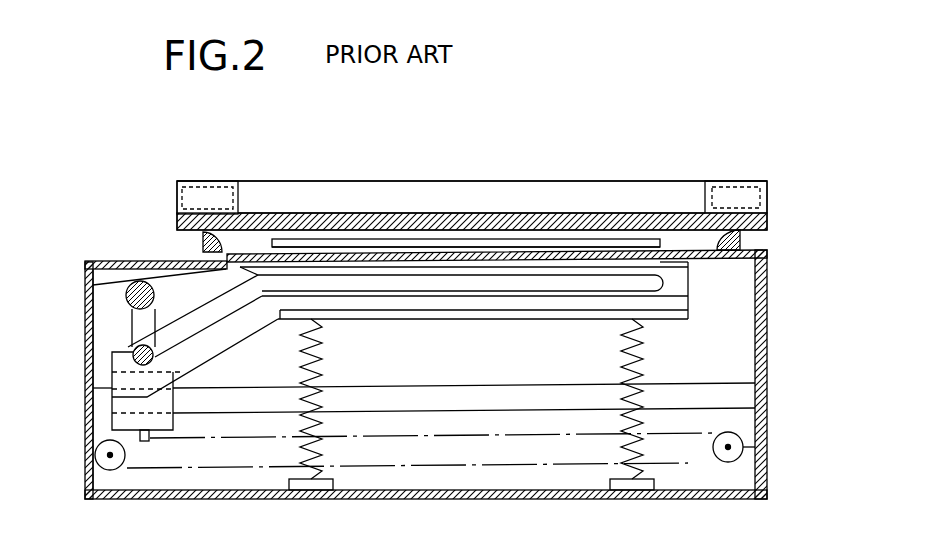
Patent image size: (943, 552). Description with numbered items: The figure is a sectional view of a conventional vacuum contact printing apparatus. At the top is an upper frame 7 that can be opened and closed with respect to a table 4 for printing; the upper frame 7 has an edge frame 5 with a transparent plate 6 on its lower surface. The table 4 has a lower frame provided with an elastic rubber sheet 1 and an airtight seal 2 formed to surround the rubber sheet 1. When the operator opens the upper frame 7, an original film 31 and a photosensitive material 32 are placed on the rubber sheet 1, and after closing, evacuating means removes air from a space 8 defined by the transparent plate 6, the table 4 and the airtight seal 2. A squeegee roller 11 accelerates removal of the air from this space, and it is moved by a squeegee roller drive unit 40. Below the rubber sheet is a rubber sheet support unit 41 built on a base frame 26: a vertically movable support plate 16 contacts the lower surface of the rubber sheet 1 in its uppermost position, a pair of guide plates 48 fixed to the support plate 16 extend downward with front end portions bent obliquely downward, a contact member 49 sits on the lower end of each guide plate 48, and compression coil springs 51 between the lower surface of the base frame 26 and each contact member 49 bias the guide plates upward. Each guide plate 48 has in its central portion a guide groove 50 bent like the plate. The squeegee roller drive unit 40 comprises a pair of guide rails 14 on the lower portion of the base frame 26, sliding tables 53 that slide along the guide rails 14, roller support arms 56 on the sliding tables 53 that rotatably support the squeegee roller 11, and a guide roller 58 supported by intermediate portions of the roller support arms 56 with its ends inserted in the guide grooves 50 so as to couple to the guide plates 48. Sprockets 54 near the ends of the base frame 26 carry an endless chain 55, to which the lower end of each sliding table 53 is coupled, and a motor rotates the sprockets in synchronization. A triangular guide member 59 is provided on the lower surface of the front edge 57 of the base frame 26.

The elastic rubber sheet 1 is at (177, 257).
The airtight seal 2 is at (740, 232).
The table 4 is at (672, 244).
The edge frame 5 is at (210, 180).
The transparent plate 6 is at (593, 213).
The upper frame 7 is at (402, 180).
The space 8 is at (280, 181).
The squeegee roller 11 is at (123, 300).
The guide rails 14 is at (436, 386).
The support plate 16 is at (673, 267).
The base frame 26 is at (765, 370).
The original film 31 is at (527, 245).
The photosensitive material 32 is at (488, 239).
The squeegee roller drive unit 40 is at (100, 408).
The rubber sheet support unit 41 is at (476, 312).
The guide plates 48 is at (687, 300).
The contact member 49 is at (578, 320).
The guide groove 50 is at (525, 286).
The compression coil springs 51 is at (330, 364).
The sliding tables 53 is at (183, 378).
The sprockets 54 is at (97, 467).
The endless chain 55 is at (478, 436).
The roller support arms 56 is at (120, 338).
The front edge 57 is at (120, 261).
The guide roller 58 is at (93, 372).
The triangular guide member 59 is at (105, 277).